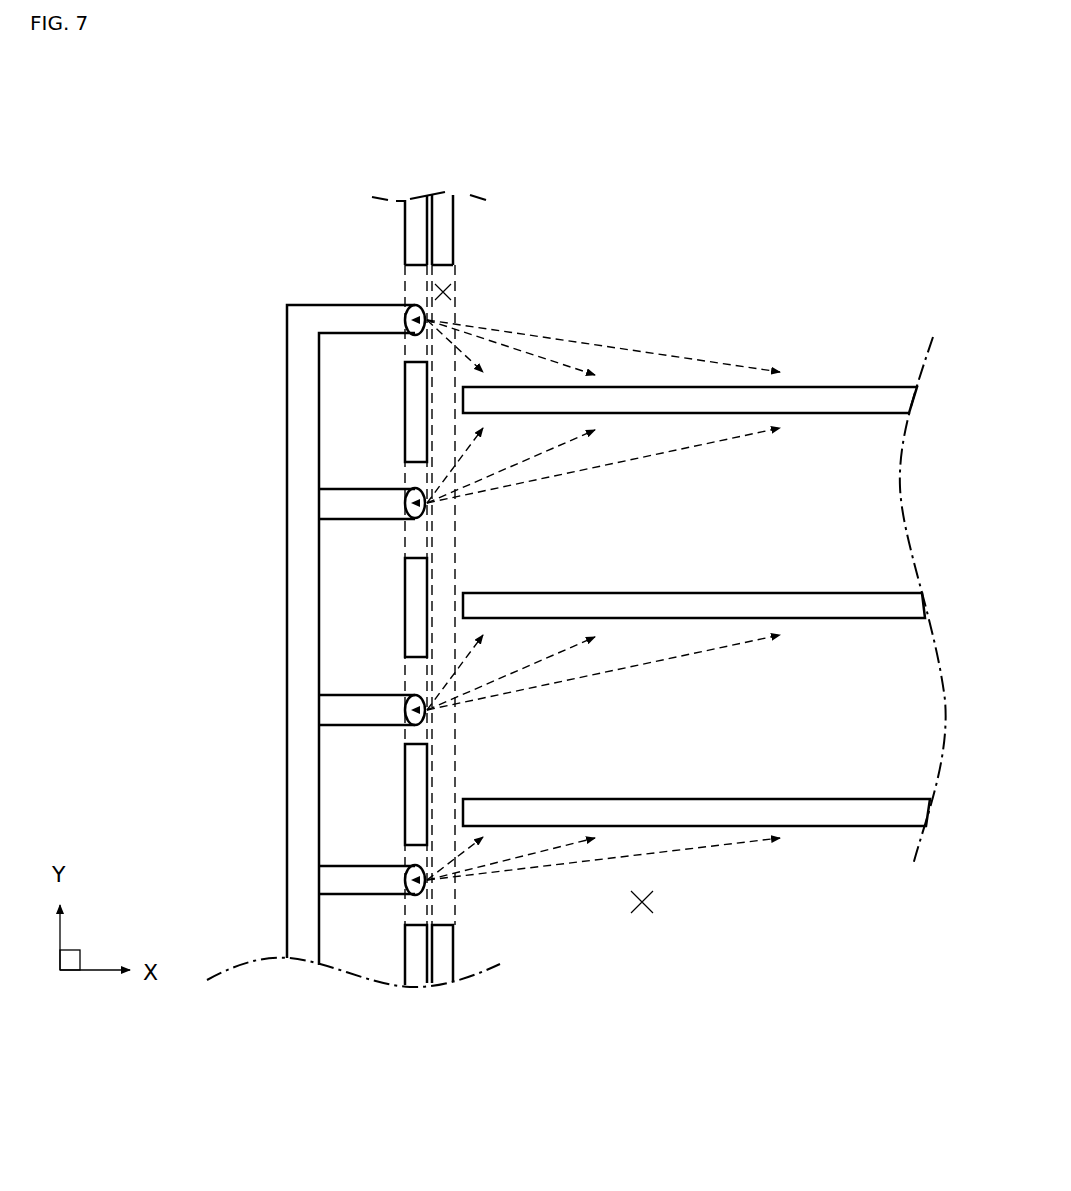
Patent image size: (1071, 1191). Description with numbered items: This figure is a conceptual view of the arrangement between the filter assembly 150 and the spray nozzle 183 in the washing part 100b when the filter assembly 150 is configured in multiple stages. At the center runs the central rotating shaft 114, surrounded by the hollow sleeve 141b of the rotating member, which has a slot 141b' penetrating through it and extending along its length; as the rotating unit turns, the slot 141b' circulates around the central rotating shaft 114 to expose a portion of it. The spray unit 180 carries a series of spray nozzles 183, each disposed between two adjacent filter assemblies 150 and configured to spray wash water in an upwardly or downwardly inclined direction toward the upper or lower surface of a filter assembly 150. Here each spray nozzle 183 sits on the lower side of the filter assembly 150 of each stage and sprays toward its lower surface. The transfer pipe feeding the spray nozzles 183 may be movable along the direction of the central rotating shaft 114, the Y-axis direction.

The central rotating shaft 114 is at (402, 247).
The sleeve 141b is at (509, 230).
The slot 141b' is at (512, 278).
The filter assembly 150 is at (838, 387).
The spray unit 180 is at (287, 823).
The spray nozzle 183 is at (367, 875).
The washing part 100b is at (642, 905).